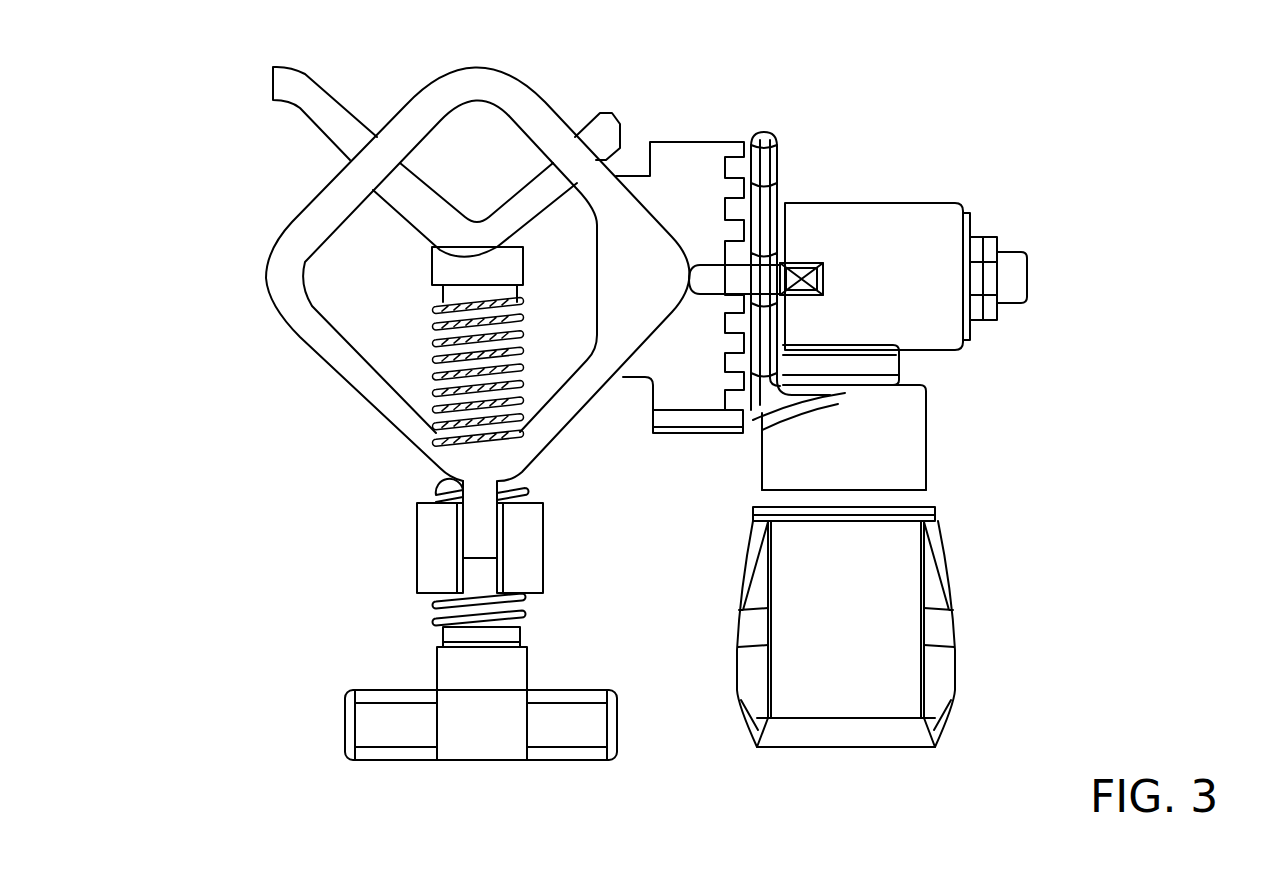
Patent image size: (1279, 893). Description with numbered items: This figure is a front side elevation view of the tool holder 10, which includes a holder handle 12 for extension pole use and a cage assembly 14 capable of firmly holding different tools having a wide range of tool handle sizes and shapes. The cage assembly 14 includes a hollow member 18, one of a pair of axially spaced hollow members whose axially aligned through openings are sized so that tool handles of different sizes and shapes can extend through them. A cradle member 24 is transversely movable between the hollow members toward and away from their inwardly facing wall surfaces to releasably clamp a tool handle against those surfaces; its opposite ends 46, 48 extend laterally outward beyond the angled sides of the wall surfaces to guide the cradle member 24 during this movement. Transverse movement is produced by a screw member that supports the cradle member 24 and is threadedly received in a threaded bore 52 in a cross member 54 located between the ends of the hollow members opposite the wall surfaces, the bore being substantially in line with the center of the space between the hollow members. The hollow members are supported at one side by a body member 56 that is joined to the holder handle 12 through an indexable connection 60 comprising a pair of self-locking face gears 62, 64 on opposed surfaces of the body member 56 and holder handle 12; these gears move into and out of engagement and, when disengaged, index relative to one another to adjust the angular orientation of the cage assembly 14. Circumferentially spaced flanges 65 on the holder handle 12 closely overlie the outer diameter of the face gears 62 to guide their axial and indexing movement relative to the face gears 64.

The tool holder 10 is at (791, 83).
The holder handle 12 is at (935, 600).
The cage assembly 14 is at (567, 63).
The hollow member 18 is at (471, 70).
The cradle member 24 is at (428, 223).
The end of the cradle member 46 is at (310, 108).
The end of the cradle member 48 is at (601, 112).
The threaded bore 52 is at (437, 393).
The cross member 54 is at (427, 541).
The body member 56 is at (675, 150).
The indexable connection 60 is at (795, 180).
The self-locking face gears 62 is at (725, 176).
The self-locking face gears 64 is at (737, 192).
The flanges 65 is at (713, 283).